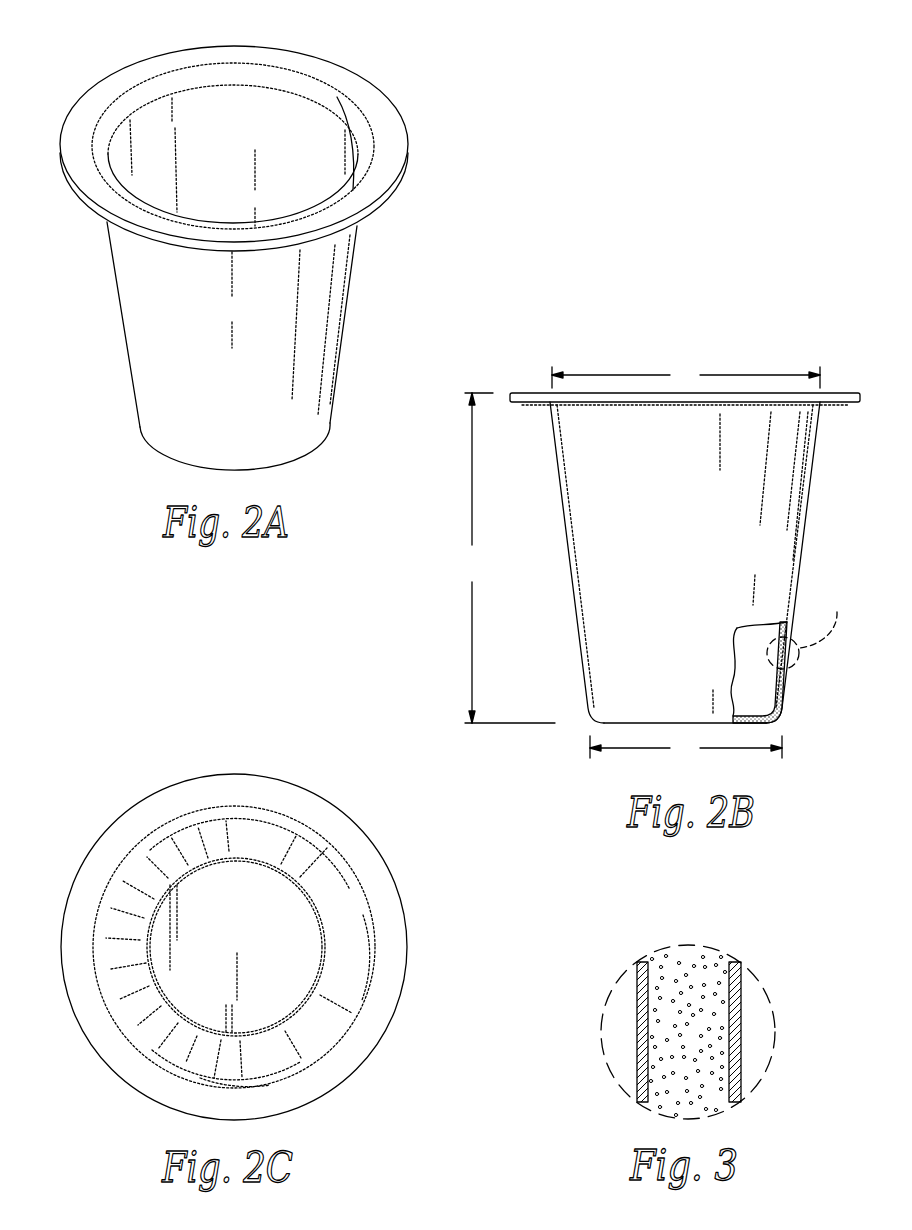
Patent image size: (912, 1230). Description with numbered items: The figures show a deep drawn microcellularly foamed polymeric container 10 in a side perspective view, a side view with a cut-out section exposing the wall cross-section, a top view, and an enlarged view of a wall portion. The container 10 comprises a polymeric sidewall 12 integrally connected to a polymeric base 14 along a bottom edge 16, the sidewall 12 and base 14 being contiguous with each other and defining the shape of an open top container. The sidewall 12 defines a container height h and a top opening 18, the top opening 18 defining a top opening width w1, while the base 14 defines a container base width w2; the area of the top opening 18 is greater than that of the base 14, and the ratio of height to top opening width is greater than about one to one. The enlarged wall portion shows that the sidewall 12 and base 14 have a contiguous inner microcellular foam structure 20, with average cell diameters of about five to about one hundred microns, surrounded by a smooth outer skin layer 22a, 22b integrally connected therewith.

In FIG. 2A, the deep drawn microcellularly foamed polymeric container 10 is at (422, 237).
In FIG. 2B, the deep drawn microcellularly foamed polymeric container 10 is at (548, 608).
In FIG. 2C, the deep drawn microcellularly foamed polymeric container 10 is at (422, 958).
In FIG. 2A, the polymeric sidewall 12 is at (140, 305).
In FIG. 2B, the polymeric sidewall 12 is at (773, 515).
In FIG. 2C, the polymeric sidewall 12 is at (352, 1003).
In FIG. 2B, the polymeric base 14 is at (750, 714).
In FIG. 2C, the polymeric base 14 is at (248, 930).
In FIG. 2A, the bottom edge 16 is at (295, 460).
In FIG. 2B, the bottom edge 16 is at (726, 743).
In FIG. 2A, the top opening 18 is at (202, 135).
In FIG. 2B, the top opening 18 is at (622, 362).
In FIG. 3, the inner microcellular foam structure 20 is at (693, 953).
In FIG. 3, the smooth outer skin layer 22a is at (640, 961).
In FIG. 3, the smooth outer skin layer 22b is at (737, 960).